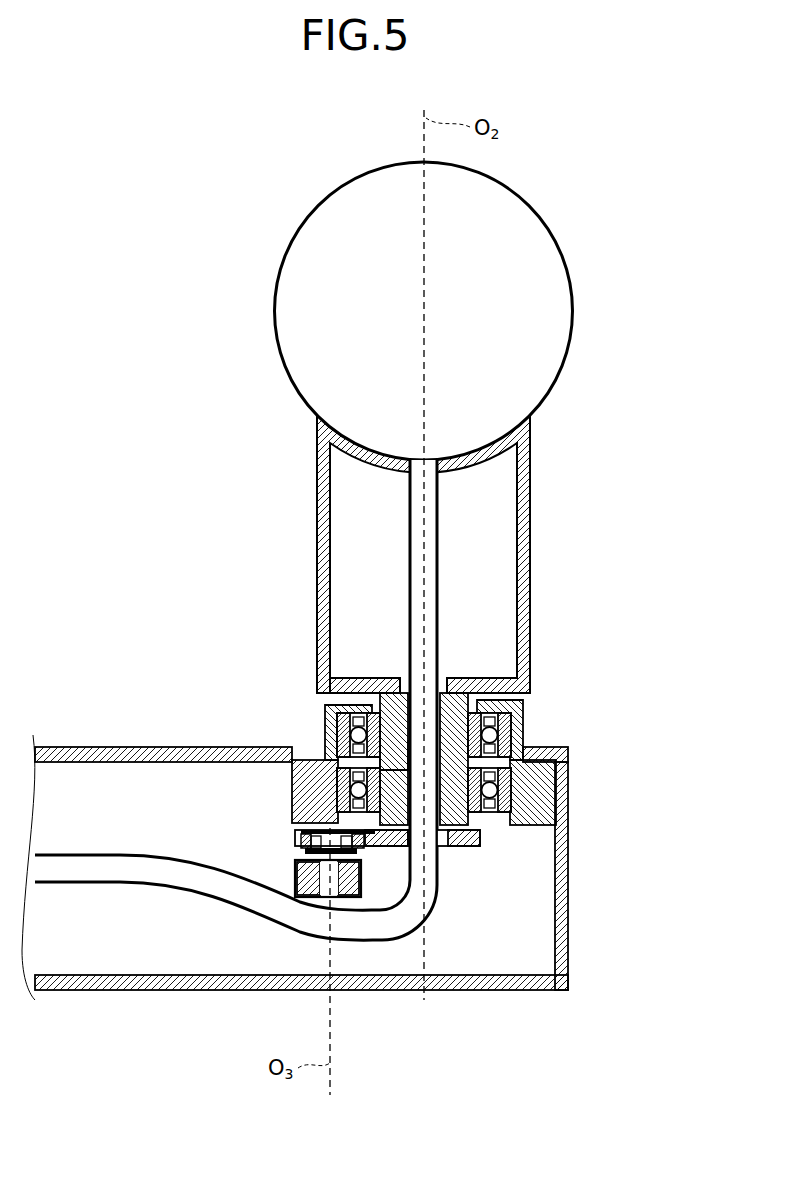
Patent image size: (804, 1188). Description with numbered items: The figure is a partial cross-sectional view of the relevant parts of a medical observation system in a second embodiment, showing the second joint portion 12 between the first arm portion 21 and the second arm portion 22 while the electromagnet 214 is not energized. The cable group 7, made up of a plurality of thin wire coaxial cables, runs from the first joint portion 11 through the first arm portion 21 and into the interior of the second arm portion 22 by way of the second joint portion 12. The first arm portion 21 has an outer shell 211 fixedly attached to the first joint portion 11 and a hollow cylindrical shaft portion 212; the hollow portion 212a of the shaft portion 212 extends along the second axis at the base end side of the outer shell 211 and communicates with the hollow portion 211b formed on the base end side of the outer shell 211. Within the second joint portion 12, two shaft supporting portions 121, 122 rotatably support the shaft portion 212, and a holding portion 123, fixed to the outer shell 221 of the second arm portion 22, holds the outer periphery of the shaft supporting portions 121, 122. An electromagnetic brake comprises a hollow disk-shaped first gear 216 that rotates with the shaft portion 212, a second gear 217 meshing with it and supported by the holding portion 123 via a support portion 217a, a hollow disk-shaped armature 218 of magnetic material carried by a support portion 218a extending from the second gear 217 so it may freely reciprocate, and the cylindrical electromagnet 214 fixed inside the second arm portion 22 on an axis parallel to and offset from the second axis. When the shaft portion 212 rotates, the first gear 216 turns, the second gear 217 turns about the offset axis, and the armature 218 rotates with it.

The first joint portion 11 is at (553, 233).
The first arm portion 21 is at (532, 552).
The outer shell 211 is at (317, 575).
The hollow portion 211b is at (440, 682).
The shaft portion 212 is at (372, 704).
The hollow portion 212a is at (404, 748).
The second joint portion 12 is at (530, 707).
The shaft supporting portion 121 is at (500, 726).
The shaft supporting portion 122 is at (505, 780).
The holding portion 123 is at (545, 818).
The first gear 216 is at (482, 838).
The second gear 217 is at (292, 834).
The support portion 217a is at (294, 830).
The armature 218 is at (296, 860).
The support portion 218a is at (296, 868).
The electromagnet 214 is at (307, 898).
The second arm portion 22 is at (568, 936).
The outer shell 221 is at (130, 747).
The cable group 7 is at (68, 853).